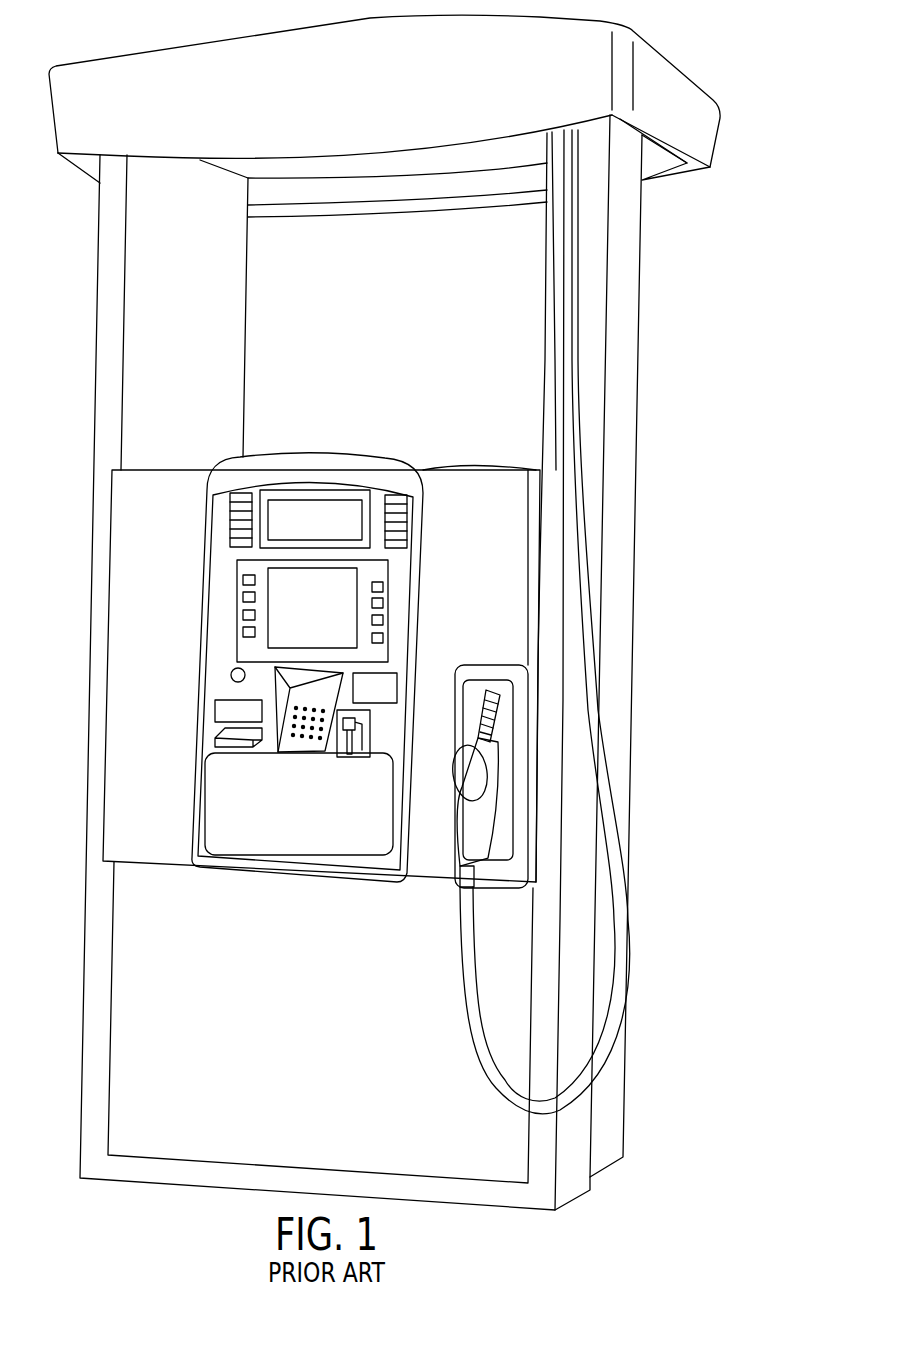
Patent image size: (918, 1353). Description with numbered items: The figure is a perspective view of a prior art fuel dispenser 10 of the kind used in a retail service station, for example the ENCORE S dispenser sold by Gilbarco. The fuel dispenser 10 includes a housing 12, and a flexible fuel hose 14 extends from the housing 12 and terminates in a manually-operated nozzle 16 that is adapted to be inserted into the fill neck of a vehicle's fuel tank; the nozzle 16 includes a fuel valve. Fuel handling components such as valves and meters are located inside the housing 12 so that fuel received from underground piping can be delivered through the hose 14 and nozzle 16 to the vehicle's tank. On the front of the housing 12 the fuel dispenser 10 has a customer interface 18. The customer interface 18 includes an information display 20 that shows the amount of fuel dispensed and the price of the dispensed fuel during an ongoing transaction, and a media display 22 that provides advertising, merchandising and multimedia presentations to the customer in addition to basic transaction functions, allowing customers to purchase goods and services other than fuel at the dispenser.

The fuel dispenser 10 is at (748, 61).
The housing 12 is at (640, 492).
The flexible fuel hose 14 is at (598, 655).
The manually-operated nozzle 16 is at (470, 840).
The customer interface 18 is at (298, 451).
The information display 20 is at (333, 492).
The media display 22 is at (359, 583).